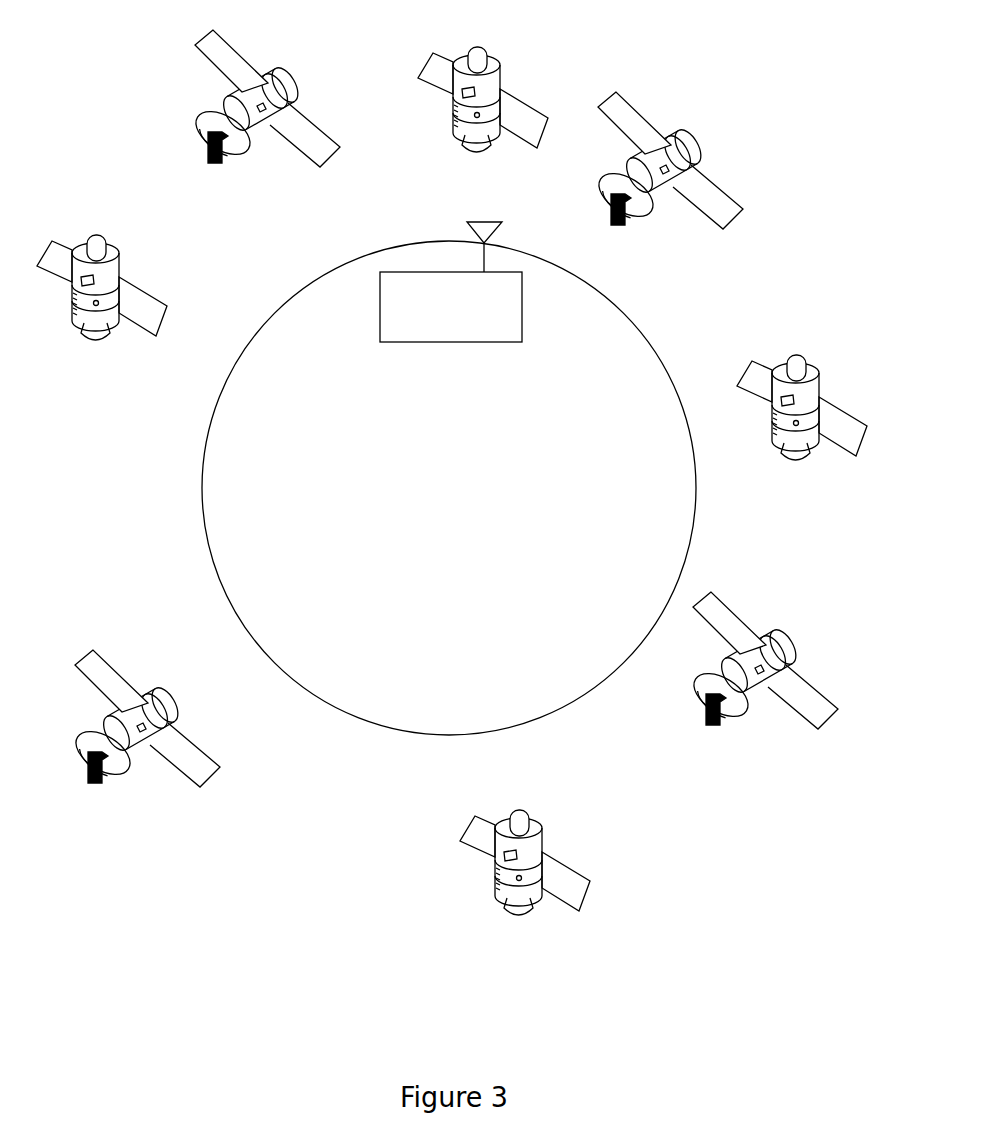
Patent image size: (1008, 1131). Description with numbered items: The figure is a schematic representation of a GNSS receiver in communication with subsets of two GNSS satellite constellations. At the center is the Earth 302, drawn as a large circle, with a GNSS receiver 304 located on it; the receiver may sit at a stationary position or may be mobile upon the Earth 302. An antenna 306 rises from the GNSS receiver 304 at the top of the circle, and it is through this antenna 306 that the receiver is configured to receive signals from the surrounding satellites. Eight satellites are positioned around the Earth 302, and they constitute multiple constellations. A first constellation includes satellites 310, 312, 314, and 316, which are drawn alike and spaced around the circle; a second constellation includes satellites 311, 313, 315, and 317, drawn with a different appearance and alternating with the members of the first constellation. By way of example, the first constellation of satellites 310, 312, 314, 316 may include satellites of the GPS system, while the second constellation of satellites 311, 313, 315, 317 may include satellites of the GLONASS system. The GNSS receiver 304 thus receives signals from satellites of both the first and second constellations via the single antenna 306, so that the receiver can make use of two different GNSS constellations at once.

The Earth 302 is at (398, 733).
The GNSS receiver 304 is at (460, 343).
The antenna 306 is at (503, 224).
The satellite 310 is at (96, 235).
The satellite 311 is at (282, 67).
The satellite 312 is at (478, 47).
The satellite 313 is at (685, 128).
The satellite 314 is at (797, 355).
The satellite 315 is at (780, 628).
The satellite 316 is at (522, 810).
The satellite 317 is at (162, 688).